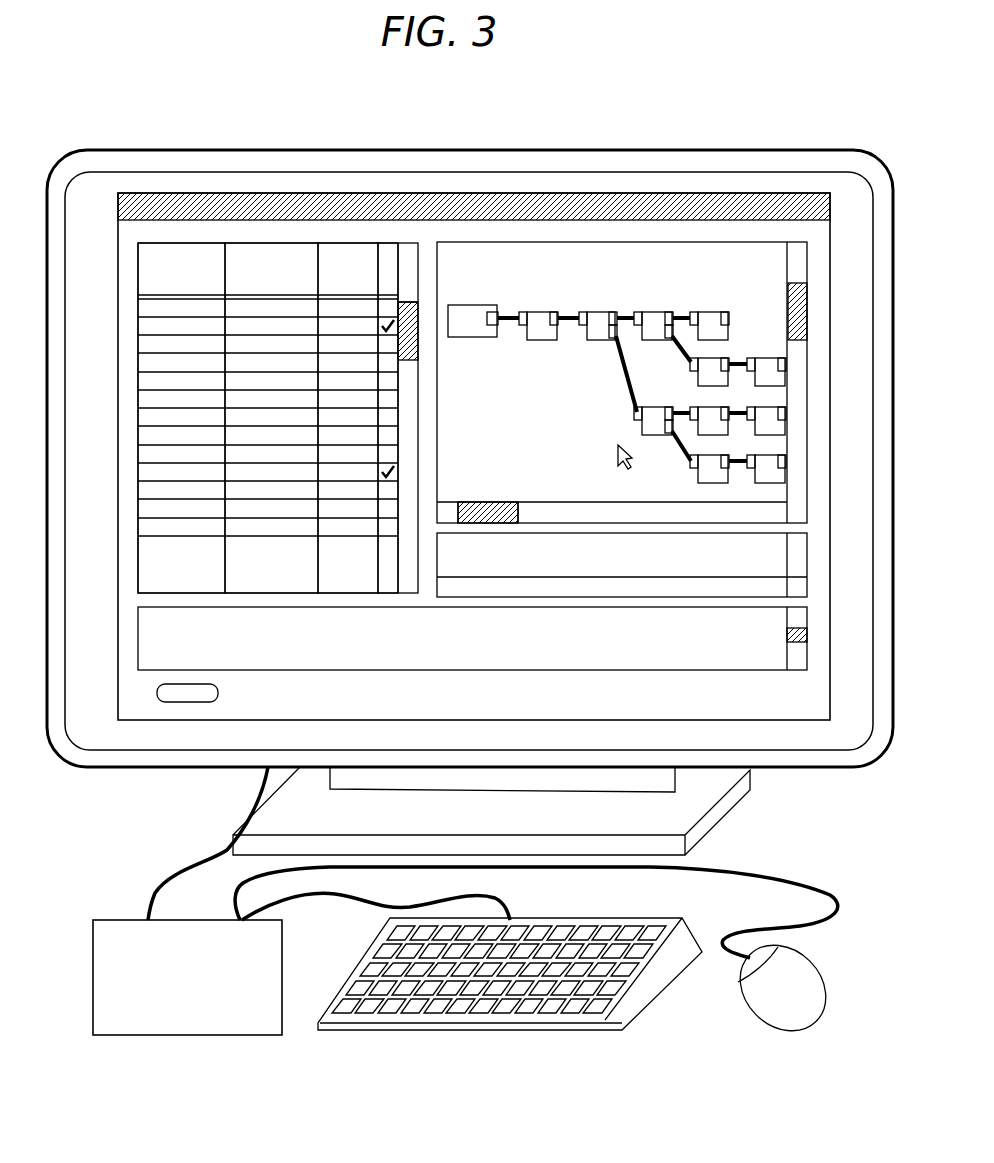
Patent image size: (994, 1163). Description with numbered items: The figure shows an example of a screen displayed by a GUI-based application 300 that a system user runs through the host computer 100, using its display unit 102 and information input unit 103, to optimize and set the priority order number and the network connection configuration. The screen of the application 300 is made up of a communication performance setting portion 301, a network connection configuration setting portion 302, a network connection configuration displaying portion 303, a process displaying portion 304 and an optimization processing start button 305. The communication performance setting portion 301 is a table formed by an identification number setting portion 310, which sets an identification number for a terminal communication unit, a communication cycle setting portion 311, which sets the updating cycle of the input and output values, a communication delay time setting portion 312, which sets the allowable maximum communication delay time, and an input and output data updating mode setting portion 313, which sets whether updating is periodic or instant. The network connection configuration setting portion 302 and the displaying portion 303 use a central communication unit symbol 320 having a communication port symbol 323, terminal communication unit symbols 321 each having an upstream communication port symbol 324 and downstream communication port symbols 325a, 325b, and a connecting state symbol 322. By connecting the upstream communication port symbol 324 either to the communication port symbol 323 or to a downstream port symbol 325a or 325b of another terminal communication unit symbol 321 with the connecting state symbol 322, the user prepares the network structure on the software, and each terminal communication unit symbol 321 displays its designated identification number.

The host computer 100 is at (118, 920).
The display unit 102 is at (628, 150).
The information input unit 103 is at (668, 918).
The application 300 is at (118, 205).
The communication performance setting portion 301 is at (245, 347).
The network connection configuration setting portion 302 is at (653, 382).
The network connection configuration displaying portion 303 is at (808, 560).
The process displaying portion 304 is at (138, 633).
The optimization processing start button 305 is at (157, 692).
The identification number setting portion 310 is at (183, 243).
The communication cycle setting portion 311 is at (273, 243).
The communication delay time setting portion 312 is at (345, 243).
The input and output data updating mode setting portion 313 is at (388, 243).
The central communication unit symbol 320 is at (460, 305).
The terminal communication unit symbol 321 is at (604, 332).
The connecting state symbol 322 is at (510, 322).
The communication port symbol 323 is at (490, 312).
The upstream communication port symbol 324 is at (582, 312).
The downstream communication port symbol 325a is at (612, 312).
The downstream communication port symbol 325b is at (612, 338).